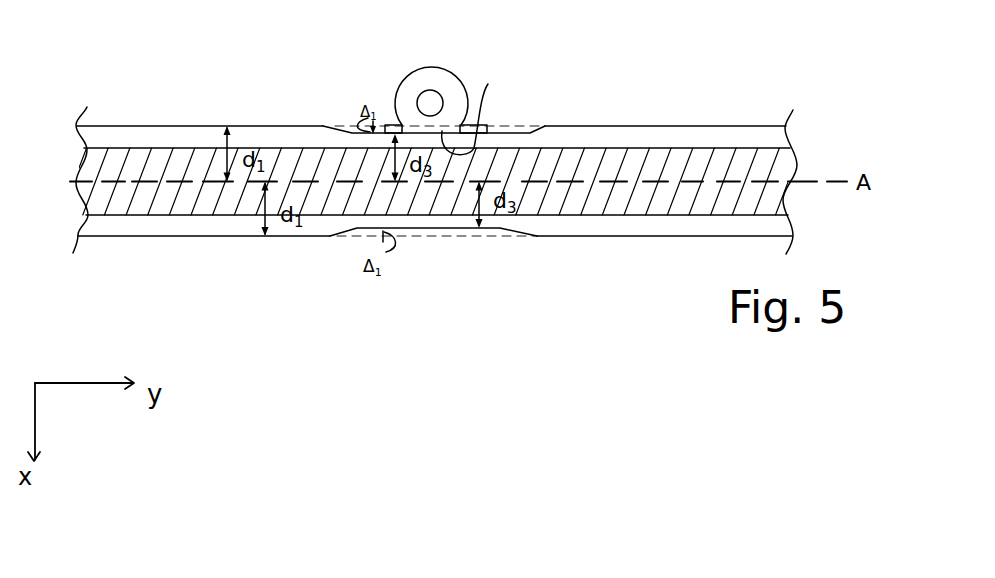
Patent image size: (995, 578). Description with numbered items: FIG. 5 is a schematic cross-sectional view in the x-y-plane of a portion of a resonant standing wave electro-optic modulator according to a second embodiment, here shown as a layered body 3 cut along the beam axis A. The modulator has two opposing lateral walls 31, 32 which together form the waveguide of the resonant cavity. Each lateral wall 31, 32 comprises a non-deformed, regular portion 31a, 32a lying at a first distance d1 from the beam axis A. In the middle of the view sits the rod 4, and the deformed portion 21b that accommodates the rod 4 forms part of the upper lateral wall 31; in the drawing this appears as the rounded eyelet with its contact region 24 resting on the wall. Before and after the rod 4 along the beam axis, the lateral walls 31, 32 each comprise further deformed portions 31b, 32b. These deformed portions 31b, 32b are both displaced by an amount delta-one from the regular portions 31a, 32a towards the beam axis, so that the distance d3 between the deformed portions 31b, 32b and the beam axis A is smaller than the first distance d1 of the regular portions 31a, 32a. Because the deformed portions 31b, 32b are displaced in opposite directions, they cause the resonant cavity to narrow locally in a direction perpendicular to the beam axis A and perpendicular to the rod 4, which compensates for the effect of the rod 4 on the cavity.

The layered plate / core layer 3 is at (177, 163).
The lateral wall 31 is at (431, 96).
The regular portion 31a is at (213, 126).
The deformed portion 31b is at (395, 133).
The lateral wall 32 is at (434, 269).
The regular portion 32a is at (215, 238).
The deformed portion 32b is at (442, 228).
The rod 4 is at (441, 91).
The deformed portion 21b is at (437, 66).
The contact surface of clip 24 is at (481, 113).